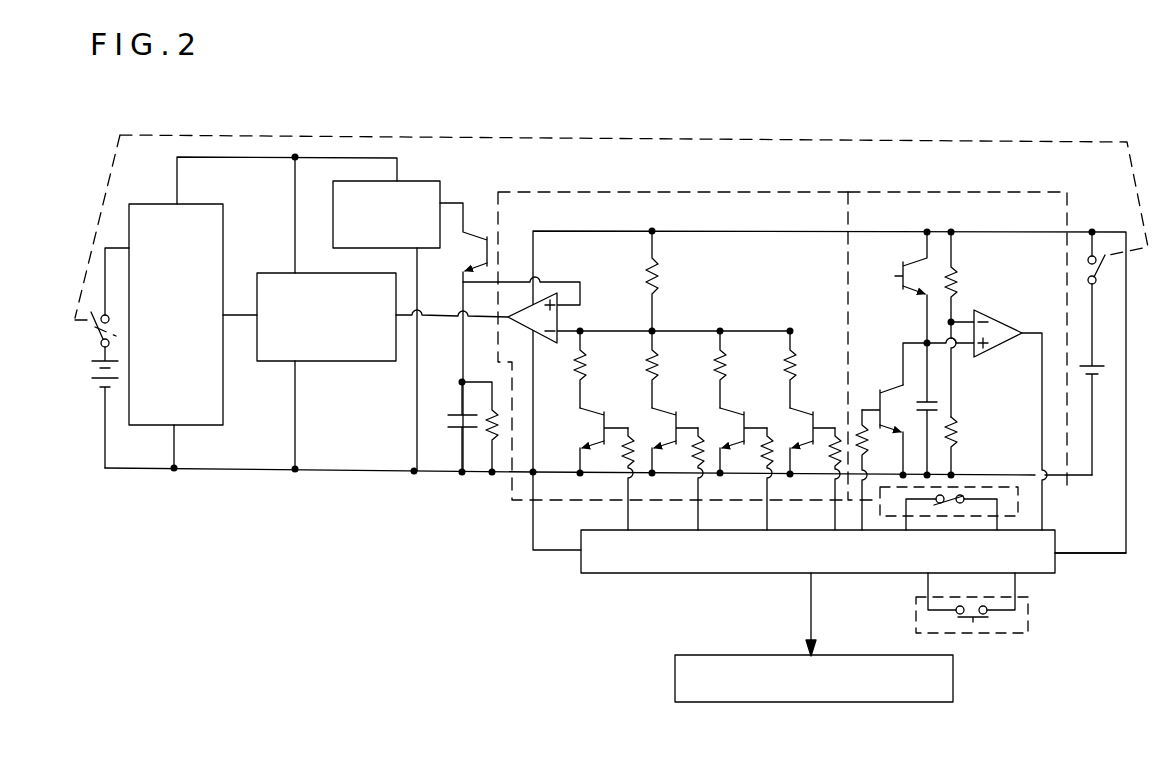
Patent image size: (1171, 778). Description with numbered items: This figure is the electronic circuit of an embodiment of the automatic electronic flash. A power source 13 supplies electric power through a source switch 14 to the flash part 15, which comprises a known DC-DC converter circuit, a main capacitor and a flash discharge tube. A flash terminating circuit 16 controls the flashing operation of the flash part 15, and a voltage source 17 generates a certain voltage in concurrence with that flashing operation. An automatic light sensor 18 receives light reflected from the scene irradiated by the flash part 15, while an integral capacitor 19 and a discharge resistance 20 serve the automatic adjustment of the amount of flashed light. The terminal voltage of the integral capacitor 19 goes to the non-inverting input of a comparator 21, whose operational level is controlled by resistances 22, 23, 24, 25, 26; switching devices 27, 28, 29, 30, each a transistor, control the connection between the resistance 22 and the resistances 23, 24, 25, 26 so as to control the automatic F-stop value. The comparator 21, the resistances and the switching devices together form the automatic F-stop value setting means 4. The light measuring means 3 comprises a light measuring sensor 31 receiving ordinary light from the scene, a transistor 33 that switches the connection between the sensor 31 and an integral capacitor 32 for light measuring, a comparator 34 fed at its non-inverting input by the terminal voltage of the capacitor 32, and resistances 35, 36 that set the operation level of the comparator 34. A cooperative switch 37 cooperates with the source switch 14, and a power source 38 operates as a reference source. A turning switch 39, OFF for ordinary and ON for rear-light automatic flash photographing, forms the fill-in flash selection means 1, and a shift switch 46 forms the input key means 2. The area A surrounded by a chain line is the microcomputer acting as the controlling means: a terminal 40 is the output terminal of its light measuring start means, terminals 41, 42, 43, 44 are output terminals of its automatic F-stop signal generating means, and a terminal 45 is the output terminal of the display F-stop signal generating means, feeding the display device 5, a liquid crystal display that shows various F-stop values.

The fill-in flash selection means 1 is at (1018, 503).
The input key means 2 is at (1028, 618).
The light measuring means 3 is at (928, 193).
The automatic F-stop value setting means 4 is at (767, 192).
The display device 5 is at (953, 668).
The power source 13 is at (93, 380).
The source switch 14 is at (96, 337).
The flash part 15 is at (223, 395).
The flash terminating circuit 16 is at (356, 361).
The voltage source 17 is at (419, 181).
The automatic light sensor 18 is at (466, 258).
The integral capacitor 19 is at (462, 412).
The discharge resistance 20 is at (489, 442).
The comparator 21 is at (523, 325).
The resistance 22 is at (656, 272).
The resistance 23 is at (584, 364).
The resistance 24 is at (656, 364).
The resistance 25 is at (724, 364).
The resistance 26 is at (802, 357).
The switching device 27 is at (589, 412).
The switching device 28 is at (661, 412).
The switching device 29 is at (729, 412).
The switching device 30 is at (798, 412).
The light measuring sensor 31 is at (903, 281).
The integral capacitor for light measuring 32 is at (938, 406).
The transistor 33 is at (903, 388).
The comparator 34 is at (1012, 346).
The resistance 35 is at (955, 285).
The resistance 36 is at (955, 436).
The cooperative switch 37 is at (1103, 282).
The power source 38 is at (1094, 372).
The turning switch 39 is at (962, 503).
The terminal 40 is at (862, 513).
The terminal 41 is at (628, 516).
The terminal 42 is at (698, 516).
The terminal 43 is at (767, 516).
The terminal 44 is at (835, 516).
The terminal 45 is at (669, 574).
The shift switch 46 is at (975, 621).
The micro computer A is at (1055, 563).